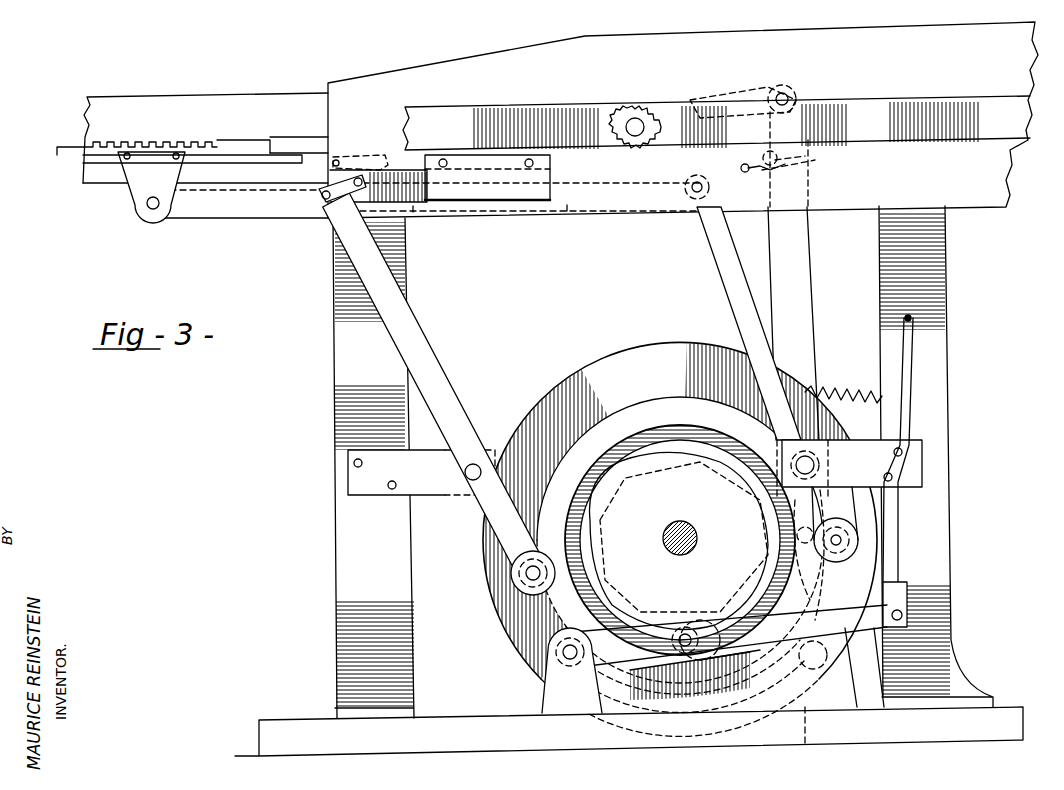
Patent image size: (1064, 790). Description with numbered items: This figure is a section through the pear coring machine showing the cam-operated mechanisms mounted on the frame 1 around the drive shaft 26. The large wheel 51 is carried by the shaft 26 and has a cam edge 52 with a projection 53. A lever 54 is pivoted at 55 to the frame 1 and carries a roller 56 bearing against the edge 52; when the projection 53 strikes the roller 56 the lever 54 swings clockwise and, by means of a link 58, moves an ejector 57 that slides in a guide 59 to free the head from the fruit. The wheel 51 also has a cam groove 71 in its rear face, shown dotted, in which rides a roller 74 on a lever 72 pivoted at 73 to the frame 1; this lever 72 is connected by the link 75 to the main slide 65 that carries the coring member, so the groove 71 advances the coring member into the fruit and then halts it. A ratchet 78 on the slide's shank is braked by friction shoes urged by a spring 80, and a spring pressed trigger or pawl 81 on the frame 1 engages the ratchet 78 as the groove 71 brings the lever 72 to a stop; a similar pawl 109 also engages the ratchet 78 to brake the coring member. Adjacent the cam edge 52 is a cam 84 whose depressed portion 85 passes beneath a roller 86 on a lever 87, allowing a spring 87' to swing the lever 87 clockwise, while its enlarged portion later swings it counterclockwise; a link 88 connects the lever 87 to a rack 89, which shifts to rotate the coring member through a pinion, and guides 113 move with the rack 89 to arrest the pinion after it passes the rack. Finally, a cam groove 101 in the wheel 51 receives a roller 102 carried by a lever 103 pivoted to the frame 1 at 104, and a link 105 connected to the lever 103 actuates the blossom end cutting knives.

The frame 1 is at (334, 590).
The drive shaft 26 is at (700, 540).
The large wheel 51 is at (607, 368).
The cam edge 52 is at (665, 405).
The projection 53 is at (838, 612).
The lever 54 is at (440, 380).
The pivot 55 is at (473, 480).
The roller 56 is at (520, 575).
The ejector 57 is at (393, 170).
The link 58 is at (352, 198).
The guide 59 is at (552, 163).
The main slide 65 is at (1015, 120).
The cam groove 71 is at (667, 486).
The lever 72 is at (805, 270).
The pivot 73 is at (828, 656).
The roller 74 is at (805, 545).
The link 75 is at (735, 92).
The ratchet 78 is at (640, 105).
The spring 80 is at (656, 668).
The pawl 81 is at (352, 157).
The cam 84 is at (556, 483).
The depressed portion 85 is at (750, 652).
The roller 86 is at (845, 540).
The lever 87 is at (749, 323).
The spring 87' is at (843, 384).
The link 88 is at (250, 205).
The rack 89 is at (232, 146).
The cam groove 101 is at (613, 615).
The roller 102 is at (695, 632).
The lever 103 is at (667, 625).
The pivot 104 is at (563, 655).
The link 105 is at (908, 372).
The pawl 109 is at (815, 157).
The guides 113 is at (294, 140).